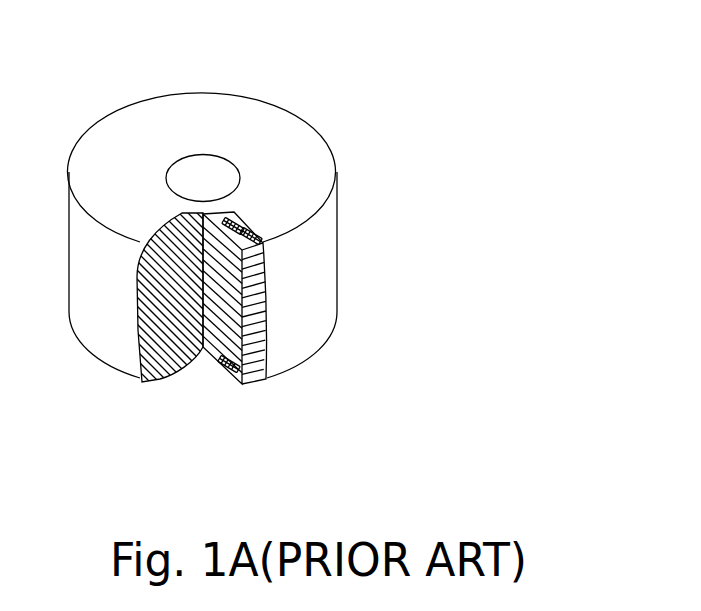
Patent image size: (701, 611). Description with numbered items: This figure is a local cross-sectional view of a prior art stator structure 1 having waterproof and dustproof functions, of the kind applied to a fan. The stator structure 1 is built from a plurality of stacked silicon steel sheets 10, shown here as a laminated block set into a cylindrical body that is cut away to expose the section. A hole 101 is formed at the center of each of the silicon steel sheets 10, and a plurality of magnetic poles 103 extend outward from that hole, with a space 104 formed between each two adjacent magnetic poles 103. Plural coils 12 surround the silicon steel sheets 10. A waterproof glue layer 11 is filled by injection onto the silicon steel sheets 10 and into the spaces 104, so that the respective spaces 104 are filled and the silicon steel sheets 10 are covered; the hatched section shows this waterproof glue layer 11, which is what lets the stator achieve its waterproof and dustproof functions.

The stator structure 1 is at (423, 93).
The silicon steel sheets 10 is at (262, 388).
The waterproof glue layer 11 is at (175, 337).
The coils 12 is at (232, 373).
The hole 101 is at (213, 170).
The magnetic poles 103 is at (258, 238).
The space 104 is at (245, 230).